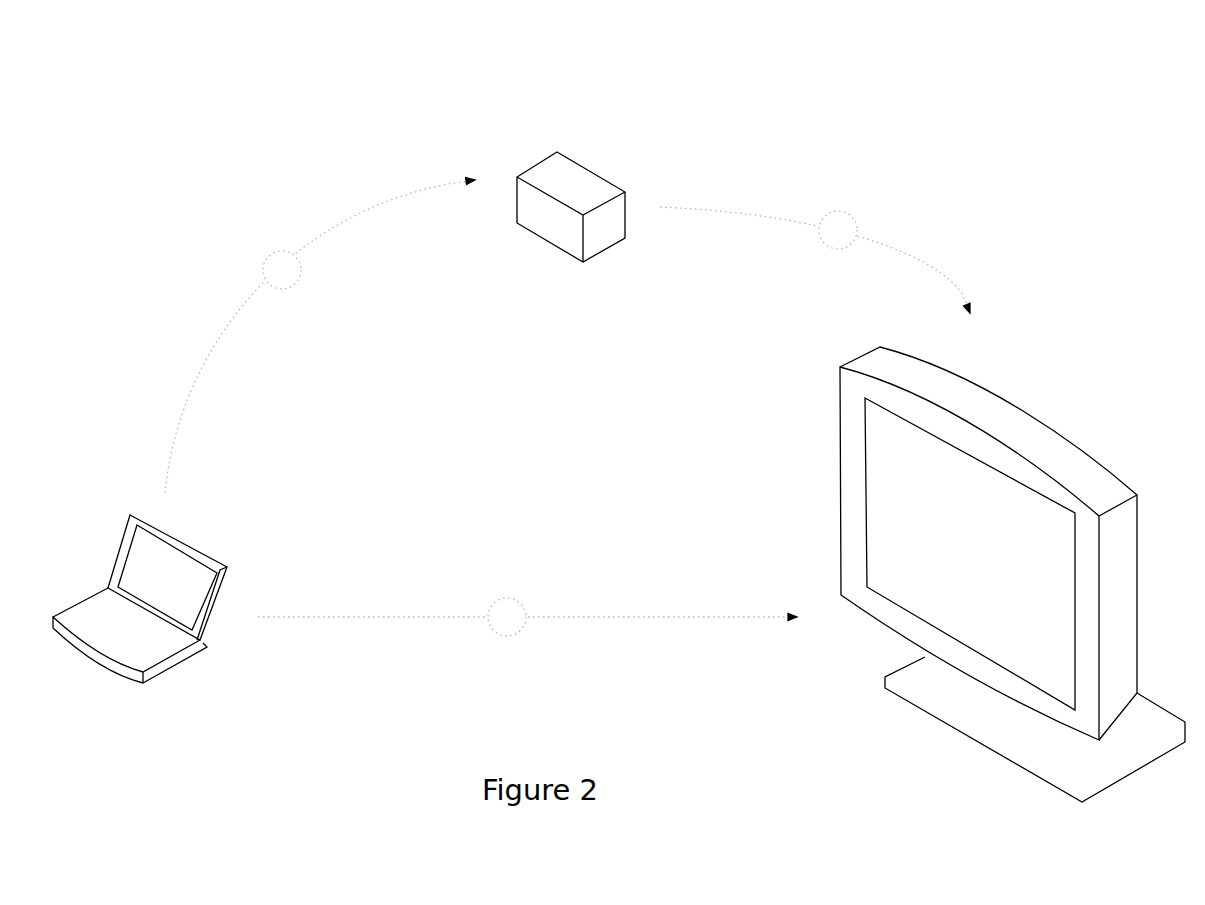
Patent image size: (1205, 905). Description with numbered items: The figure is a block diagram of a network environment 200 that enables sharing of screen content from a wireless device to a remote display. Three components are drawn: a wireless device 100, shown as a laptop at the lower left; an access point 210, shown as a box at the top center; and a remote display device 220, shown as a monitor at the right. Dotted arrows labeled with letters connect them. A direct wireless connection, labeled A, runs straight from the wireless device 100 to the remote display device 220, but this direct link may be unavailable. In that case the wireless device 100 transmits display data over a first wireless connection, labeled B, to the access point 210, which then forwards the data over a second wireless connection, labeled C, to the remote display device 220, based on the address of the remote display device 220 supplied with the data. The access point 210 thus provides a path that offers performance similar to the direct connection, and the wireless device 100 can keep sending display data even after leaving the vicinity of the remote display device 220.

The wireless device 100 is at (236, 521).
The network environment 200 is at (1007, 112).
The access point 210 is at (624, 153).
The remote display device 220 is at (995, 370).